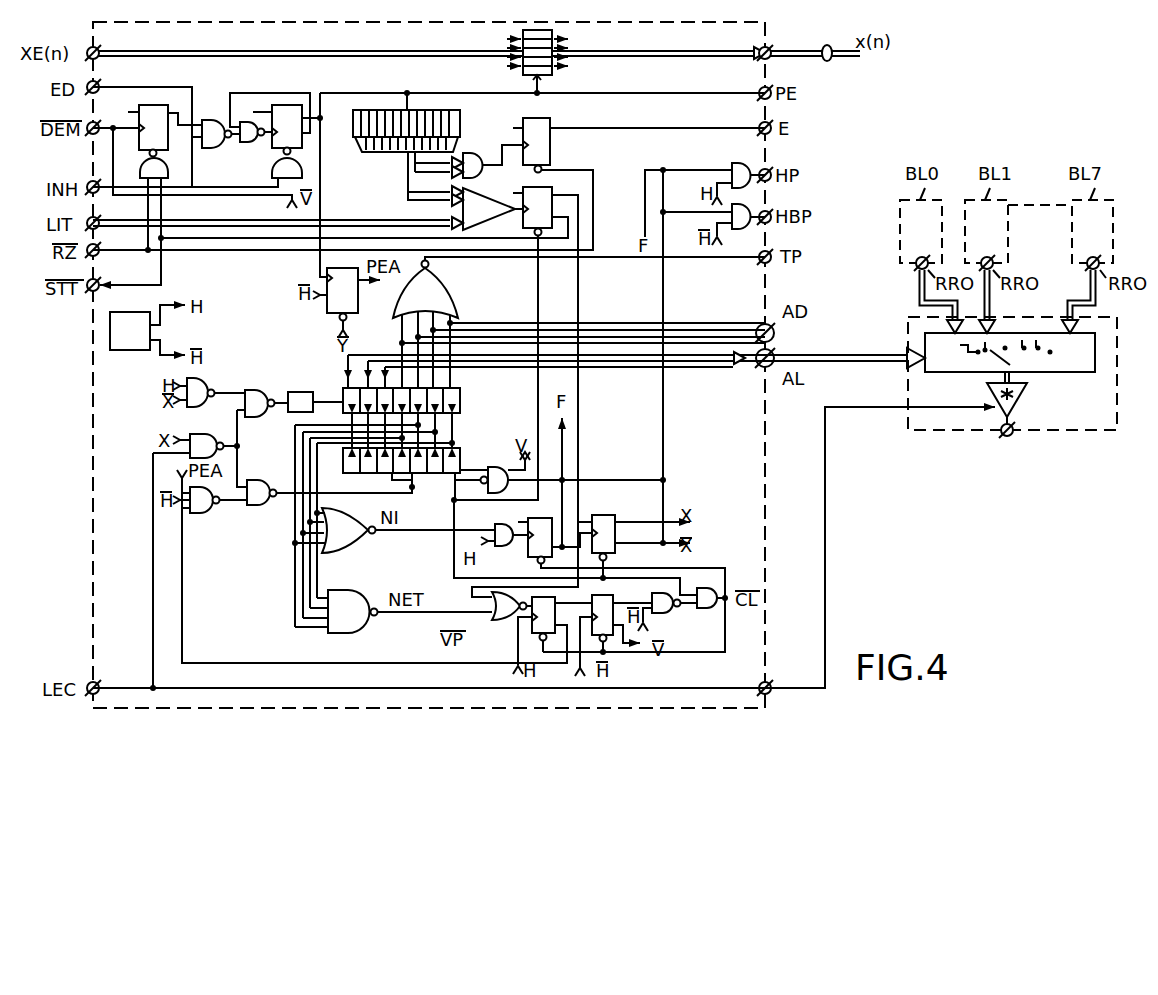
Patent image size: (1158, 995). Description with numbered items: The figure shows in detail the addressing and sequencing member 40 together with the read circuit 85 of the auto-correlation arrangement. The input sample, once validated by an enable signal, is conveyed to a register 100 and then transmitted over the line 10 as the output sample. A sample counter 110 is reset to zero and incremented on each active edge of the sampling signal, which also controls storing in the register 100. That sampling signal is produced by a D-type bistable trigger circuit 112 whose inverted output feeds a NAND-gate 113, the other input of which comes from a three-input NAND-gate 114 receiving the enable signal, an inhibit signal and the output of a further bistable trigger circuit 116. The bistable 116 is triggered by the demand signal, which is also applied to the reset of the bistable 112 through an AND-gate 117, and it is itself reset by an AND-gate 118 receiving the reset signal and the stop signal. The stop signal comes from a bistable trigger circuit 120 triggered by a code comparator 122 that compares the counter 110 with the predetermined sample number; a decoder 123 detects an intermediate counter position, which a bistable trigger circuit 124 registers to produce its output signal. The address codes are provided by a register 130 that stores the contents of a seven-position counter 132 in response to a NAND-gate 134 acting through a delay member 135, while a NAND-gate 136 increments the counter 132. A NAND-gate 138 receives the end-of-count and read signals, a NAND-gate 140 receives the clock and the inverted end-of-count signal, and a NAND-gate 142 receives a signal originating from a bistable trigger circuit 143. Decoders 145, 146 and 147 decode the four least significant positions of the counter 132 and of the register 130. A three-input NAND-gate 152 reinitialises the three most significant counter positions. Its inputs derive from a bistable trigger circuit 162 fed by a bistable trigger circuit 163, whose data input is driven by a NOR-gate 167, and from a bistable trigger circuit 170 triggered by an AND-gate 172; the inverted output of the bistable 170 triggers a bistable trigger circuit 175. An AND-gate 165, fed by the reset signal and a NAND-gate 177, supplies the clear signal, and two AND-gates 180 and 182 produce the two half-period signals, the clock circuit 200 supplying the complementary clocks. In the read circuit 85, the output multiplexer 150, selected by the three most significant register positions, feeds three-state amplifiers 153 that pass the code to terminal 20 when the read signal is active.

The line 10 is at (830, 60).
The terminal 20 is at (1010, 437).
The addressing and sequencing member 40 is at (765, 640).
The read circuit 85 is at (923, 430).
The register 100 is at (552, 33).
The sample counter 110 is at (452, 113).
The D-type bistable trigger circuit 112 is at (290, 105).
The NAND-gate 113 is at (247, 142).
The NAND-gate 114 is at (212, 148).
The D-type bistable trigger circuit 116 is at (160, 108).
The AND-gate 117 is at (302, 170).
The AND-gate 118 is at (140, 170).
The D-type bistable trigger circuit 120 is at (552, 205).
The code comparator 122 is at (475, 209).
The decoder 123 is at (490, 145).
The bistable trigger circuit 124 is at (550, 145).
The register 130 is at (460, 394).
The seven-position counter 132 is at (460, 458).
The NAND-gate 134 is at (258, 390).
The delay member 135 is at (318, 382).
The NAND-gate 136 is at (260, 480).
The NAND-gate 138 is at (203, 434).
The NAND-gate 140 is at (200, 378).
The NAND-gate 142 is at (203, 513).
The D-type bistable trigger circuit 143 is at (358, 300).
The decoder 145 is at (350, 550).
The decoder 146 is at (350, 630).
The decoder 147 is at (445, 300).
The output multiplexer 150 is at (1080, 360).
The NAND-gate 152 is at (515, 458).
The three-state amplifiers 153 is at (1025, 390).
The D-type bistable trigger circuit 162 is at (607, 633).
The D-type bistable trigger circuit 163 is at (535, 633).
The AND-gate 165 is at (712, 588).
The NOR-gate 167 is at (495, 598).
The D-type bistable trigger circuit 170 is at (535, 557).
The AND-gate 172 is at (490, 520).
The D-type bistable trigger circuit 175 is at (603, 515).
The NAND-gate 177 is at (668, 613).
The AND-gate 180 is at (745, 150).
The AND-gate 182 is at (742, 229).
The clock circuit 200 is at (117, 350).